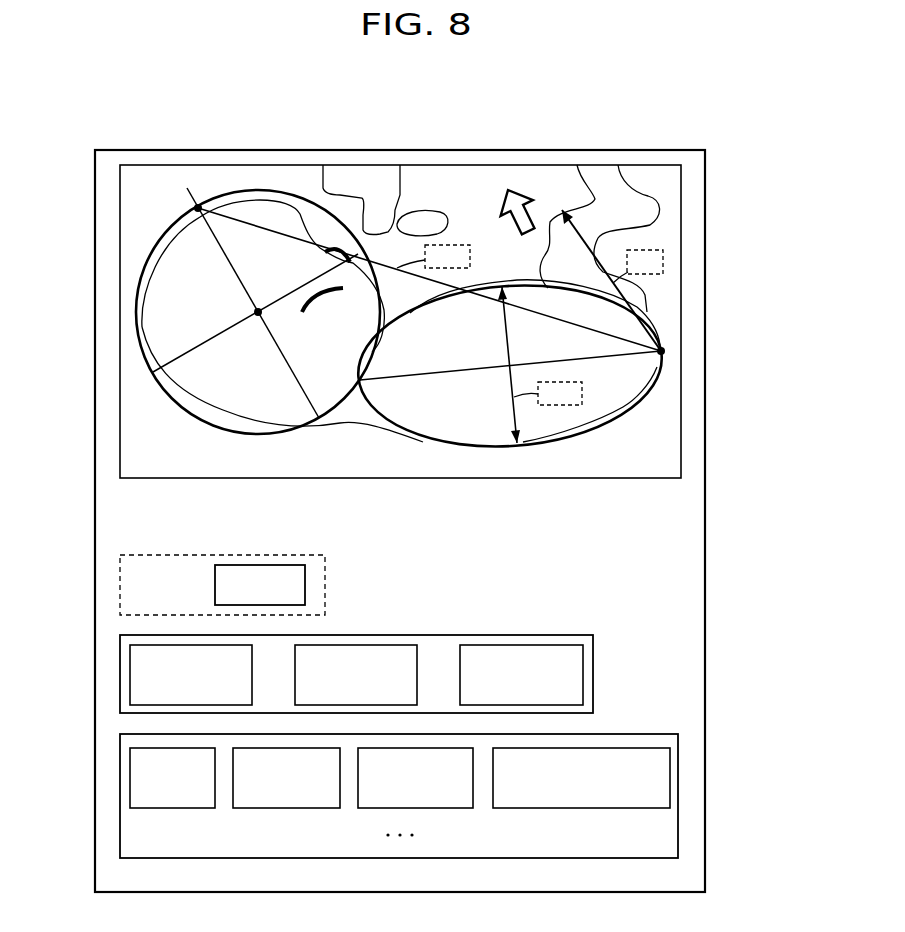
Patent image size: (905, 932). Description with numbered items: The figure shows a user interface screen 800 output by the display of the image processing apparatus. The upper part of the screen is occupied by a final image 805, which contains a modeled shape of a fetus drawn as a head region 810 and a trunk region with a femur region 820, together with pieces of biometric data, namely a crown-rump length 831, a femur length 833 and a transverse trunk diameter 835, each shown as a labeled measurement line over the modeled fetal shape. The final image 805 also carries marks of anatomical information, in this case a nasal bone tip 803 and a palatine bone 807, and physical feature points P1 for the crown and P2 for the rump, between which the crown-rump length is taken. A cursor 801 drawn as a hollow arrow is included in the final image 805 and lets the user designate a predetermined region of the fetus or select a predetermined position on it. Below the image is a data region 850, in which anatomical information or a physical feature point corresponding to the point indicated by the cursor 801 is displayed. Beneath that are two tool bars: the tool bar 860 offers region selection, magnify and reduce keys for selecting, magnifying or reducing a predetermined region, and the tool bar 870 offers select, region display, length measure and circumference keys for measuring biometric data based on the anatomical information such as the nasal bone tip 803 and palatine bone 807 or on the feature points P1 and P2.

The user interface screen 800 is at (457, 150).
The cursor 801 is at (522, 188).
The nasal bone tip 803 is at (337, 242).
The final image 805 is at (658, 165).
The palatine bone 807 is at (318, 292).
The head circle region of interest 810 is at (262, 228).
The femur region of interest 820 is at (596, 198).
The CRL 831 is at (447, 244).
The FL 833 is at (663, 262).
The TTD 835 is at (559, 405).
The data region 850 is at (120, 585).
The tool bar 860 is at (120, 675).
The tool bar 870 is at (120, 797).
The crown P1 is at (198, 208).
The rump P2 is at (661, 351).